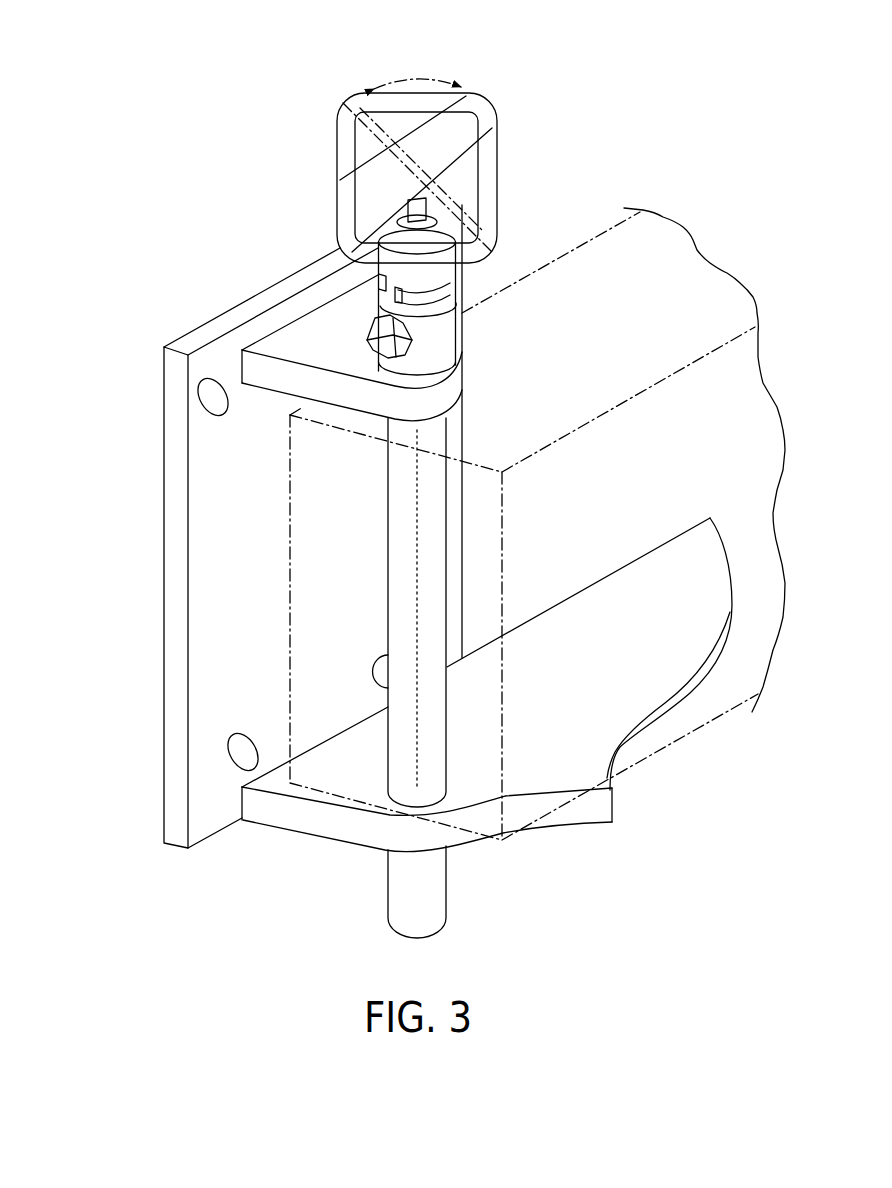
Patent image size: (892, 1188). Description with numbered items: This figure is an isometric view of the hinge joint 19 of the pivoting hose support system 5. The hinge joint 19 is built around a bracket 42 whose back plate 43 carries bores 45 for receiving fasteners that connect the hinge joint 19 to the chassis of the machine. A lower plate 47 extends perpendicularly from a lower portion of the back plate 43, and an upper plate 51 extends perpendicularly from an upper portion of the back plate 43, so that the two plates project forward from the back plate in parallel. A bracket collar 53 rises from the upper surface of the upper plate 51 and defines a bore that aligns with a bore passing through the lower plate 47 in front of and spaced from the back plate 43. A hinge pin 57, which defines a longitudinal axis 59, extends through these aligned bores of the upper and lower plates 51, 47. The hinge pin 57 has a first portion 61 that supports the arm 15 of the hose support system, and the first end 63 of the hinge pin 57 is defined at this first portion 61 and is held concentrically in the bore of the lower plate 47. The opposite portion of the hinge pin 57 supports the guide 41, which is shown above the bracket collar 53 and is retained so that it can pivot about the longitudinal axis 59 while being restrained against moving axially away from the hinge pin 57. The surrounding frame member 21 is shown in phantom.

The pivoting hose support system 5 is at (162, 103).
The arm 15 is at (700, 756).
The hinge joint 19 is at (265, 852).
The gate frame post 21 is at (725, 704).
The guide 41 is at (500, 101).
The bracket 42 is at (128, 536).
The back plate 43 is at (176, 605).
The bores 45 is at (214, 402).
The lower plate 47 is at (362, 827).
The upper plate 51 is at (330, 332).
The bracket collar 53 is at (440, 338).
The hinge pin 57 is at (450, 557).
The longitudinal axis 59 is at (412, 608).
The first portion 61 is at (463, 700).
The first end 63 is at (453, 776).